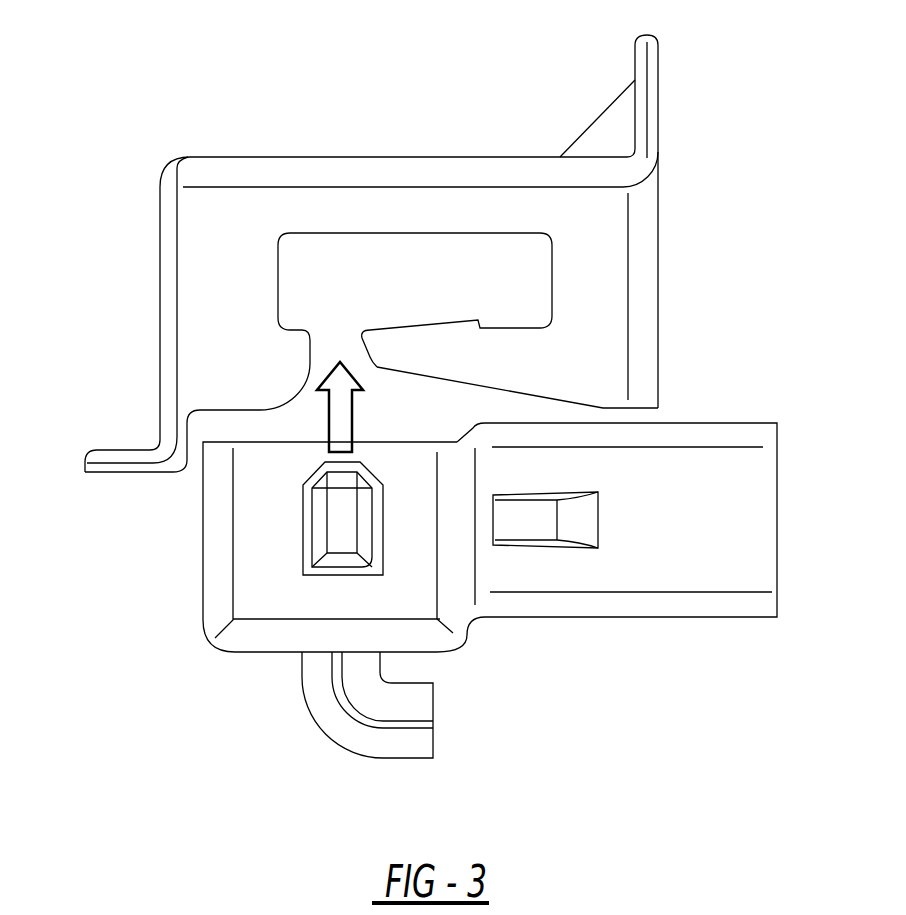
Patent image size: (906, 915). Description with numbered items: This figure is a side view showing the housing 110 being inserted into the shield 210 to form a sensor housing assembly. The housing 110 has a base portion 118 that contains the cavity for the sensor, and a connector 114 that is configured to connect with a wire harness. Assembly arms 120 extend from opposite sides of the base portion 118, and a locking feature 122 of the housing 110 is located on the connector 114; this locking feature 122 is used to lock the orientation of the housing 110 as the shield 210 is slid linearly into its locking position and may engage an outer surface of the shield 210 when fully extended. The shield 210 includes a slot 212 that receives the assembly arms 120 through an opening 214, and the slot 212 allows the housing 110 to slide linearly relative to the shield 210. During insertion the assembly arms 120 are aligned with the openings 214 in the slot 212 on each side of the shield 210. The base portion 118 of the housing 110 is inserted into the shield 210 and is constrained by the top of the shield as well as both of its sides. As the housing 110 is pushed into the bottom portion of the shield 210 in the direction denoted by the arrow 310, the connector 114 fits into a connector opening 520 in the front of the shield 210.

The housing 110 is at (434, 630).
The connector 114 is at (617, 581).
The base portion 118 is at (273, 508).
The assembly arms 120 is at (340, 513).
The locking feature 122 is at (527, 523).
The shield 210 is at (435, 251).
The slot 212 is at (503, 263).
The opening 214 is at (338, 342).
The arrow 310 is at (329, 422).
The connector opening 520 is at (662, 288).